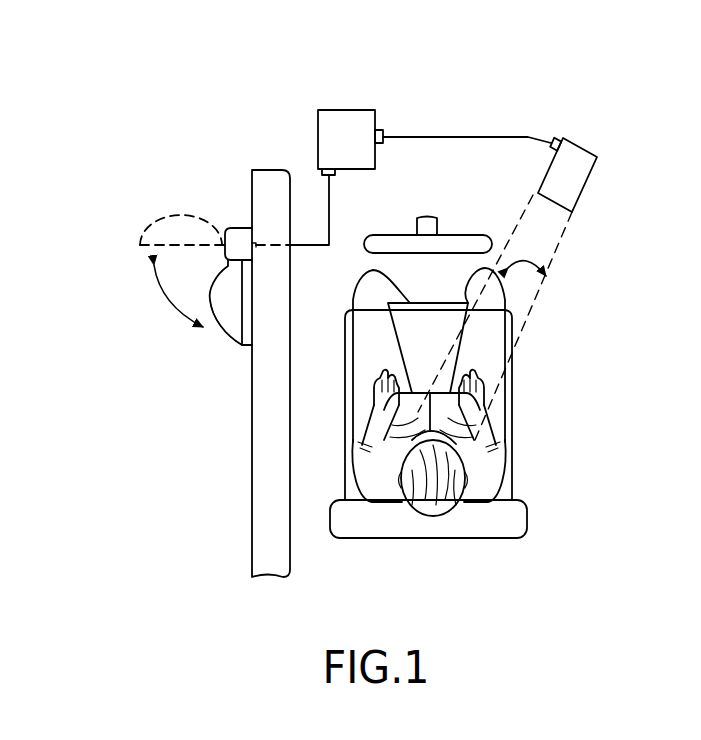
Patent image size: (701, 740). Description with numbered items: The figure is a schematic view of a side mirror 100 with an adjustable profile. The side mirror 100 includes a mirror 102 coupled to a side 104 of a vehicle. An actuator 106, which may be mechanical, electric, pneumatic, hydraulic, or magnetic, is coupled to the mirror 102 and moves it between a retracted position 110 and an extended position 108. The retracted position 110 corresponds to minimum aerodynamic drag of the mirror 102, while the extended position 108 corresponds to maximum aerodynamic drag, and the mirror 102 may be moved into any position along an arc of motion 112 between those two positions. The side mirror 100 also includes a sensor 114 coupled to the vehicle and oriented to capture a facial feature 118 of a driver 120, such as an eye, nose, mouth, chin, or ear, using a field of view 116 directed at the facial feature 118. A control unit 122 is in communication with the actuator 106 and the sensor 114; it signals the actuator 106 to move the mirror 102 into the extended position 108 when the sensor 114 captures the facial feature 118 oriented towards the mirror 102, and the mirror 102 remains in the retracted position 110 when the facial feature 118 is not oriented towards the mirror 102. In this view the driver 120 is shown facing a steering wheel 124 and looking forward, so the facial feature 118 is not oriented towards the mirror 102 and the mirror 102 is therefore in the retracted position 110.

The side mirror 100 is at (573, 88).
The mirror 102 is at (208, 300).
The side of a vehicle 104 is at (252, 505).
The actuator 106 is at (242, 228).
The extended position 108 is at (150, 232).
The retracted position 110 is at (225, 340).
The arc of motion 112 is at (160, 296).
The sensor 114 is at (585, 182).
The field of view 116 is at (550, 276).
The facial feature 118 is at (513, 460).
The driver 120 is at (462, 444).
The control unit 122 is at (353, 110).
The steering wheel 124 is at (463, 235).